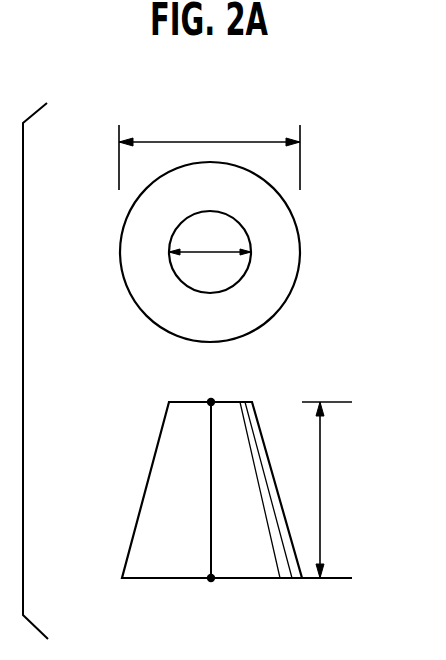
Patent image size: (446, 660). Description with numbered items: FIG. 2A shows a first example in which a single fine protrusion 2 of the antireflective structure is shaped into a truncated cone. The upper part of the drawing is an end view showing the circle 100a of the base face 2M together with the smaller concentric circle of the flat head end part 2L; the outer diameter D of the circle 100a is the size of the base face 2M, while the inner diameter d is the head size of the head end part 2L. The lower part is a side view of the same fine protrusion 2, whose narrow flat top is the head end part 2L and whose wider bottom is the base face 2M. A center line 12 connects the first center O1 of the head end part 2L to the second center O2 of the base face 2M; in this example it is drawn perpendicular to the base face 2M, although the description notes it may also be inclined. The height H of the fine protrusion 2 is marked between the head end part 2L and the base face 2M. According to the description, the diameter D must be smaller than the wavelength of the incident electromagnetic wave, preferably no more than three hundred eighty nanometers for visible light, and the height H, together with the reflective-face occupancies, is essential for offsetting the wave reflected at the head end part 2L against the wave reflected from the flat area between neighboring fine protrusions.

The circle of base face 100a is at (293, 216).
The fine protrusion 2 is at (173, 464).
The head end part 2L is at (181, 402).
The base face 2M is at (158, 578).
The center line 12 is at (211, 508).
The first center O1 is at (213, 388).
The second center O2 is at (215, 597).
The diameter of base face D is at (209, 147).
The head size d is at (210, 238).
The height of fine protrusion H is at (327, 490).